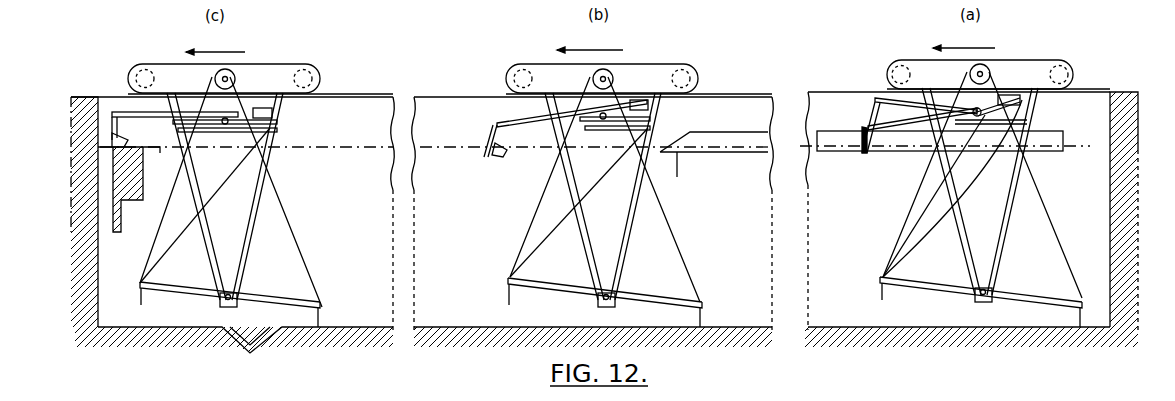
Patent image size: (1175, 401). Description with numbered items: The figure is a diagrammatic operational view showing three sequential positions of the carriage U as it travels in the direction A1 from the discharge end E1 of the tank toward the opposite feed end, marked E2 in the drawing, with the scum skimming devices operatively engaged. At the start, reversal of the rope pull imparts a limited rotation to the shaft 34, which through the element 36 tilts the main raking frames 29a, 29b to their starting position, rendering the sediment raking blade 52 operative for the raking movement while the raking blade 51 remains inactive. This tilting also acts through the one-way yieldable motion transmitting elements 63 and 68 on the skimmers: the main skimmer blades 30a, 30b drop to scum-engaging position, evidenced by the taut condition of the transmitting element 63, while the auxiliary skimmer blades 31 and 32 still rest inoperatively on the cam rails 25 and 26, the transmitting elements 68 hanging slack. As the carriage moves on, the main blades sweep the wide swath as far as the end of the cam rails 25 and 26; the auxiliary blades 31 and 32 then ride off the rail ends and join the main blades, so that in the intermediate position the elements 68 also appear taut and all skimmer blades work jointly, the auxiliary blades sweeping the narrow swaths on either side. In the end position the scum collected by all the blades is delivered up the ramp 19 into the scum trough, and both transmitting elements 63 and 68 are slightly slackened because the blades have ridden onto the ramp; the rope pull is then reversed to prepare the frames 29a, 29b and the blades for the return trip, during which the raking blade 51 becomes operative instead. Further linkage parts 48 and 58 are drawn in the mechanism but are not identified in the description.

The carriage U is at (303, 59).
The shaft 34 is at (228, 78).
The direction of carriage travel A1 is at (212, 52).
The element 36 is at (290, 216).
The scissor arm 48 is at (250, 267).
The one-way yieldable motion transmitting element 68 is at (225, 193).
The one-way yieldable motion transmitting element 63 is at (243, 153).
The platform 58 is at (232, 101).
The auxiliary skimmer blade 31 is at (110, 63).
The auxiliary skimmer blade 32 is at (127, 117).
The main skimmer blade 30a is at (68, 95).
The main skimmer blade 30b is at (110, 118).
The main raking frame 29a is at (331, 280).
The main raking frame 29b is at (297, 297).
The raking blade 51 is at (142, 300).
The sediment raking blade 52 is at (320, 322).
The ramp 19 is at (160, 149).
The cam rail 25 is at (724, 128).
The cam rail 26 is at (708, 133).
The discharge end E1 is at (1139, 92).
The left pit wall E2 is at (70, 99).